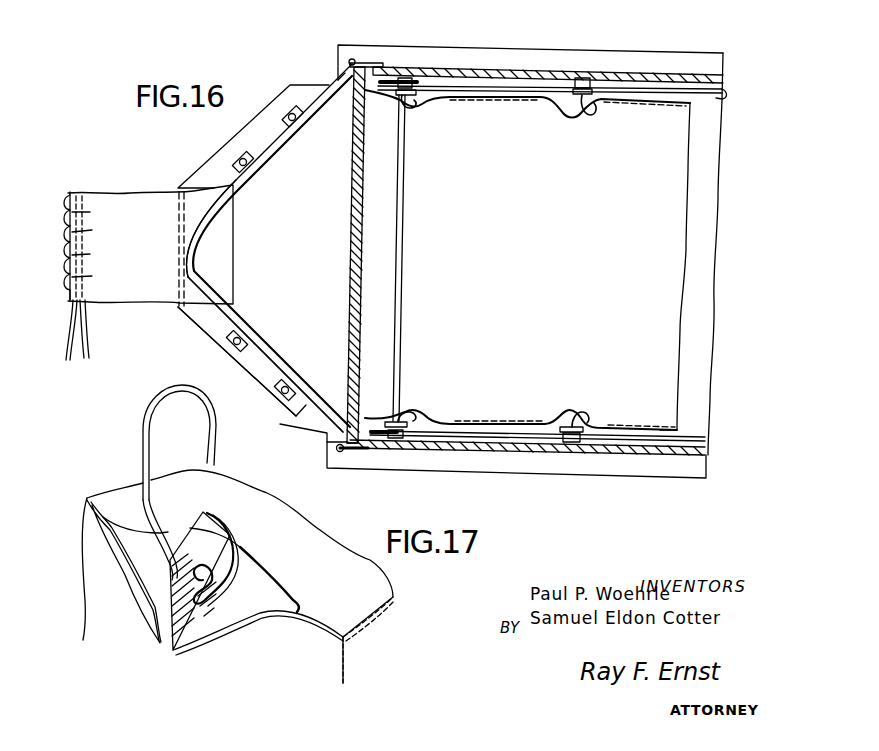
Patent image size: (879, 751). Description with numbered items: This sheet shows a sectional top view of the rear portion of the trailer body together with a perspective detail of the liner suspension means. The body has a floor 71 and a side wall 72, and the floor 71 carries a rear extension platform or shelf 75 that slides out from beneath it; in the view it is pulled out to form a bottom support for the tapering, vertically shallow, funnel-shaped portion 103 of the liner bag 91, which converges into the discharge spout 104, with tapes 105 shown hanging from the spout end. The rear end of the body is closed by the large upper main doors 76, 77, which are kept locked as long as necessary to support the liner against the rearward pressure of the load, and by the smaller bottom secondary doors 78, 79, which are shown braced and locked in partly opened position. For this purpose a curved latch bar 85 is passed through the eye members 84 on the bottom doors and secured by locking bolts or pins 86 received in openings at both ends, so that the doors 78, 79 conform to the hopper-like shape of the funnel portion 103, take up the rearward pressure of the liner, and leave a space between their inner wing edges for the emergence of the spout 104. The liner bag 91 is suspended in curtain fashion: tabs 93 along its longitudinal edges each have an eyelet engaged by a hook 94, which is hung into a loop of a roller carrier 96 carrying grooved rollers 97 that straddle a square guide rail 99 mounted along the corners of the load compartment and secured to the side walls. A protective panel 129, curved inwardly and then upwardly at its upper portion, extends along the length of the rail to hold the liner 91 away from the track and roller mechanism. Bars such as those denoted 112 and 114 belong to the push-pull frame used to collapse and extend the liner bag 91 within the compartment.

In FIG. 16, the floor 71 is at (326, 447).
In FIG. 16, the side wall 72 is at (552, 76).
In FIG. 16, the rear extension platform or shelf 75 is at (198, 328).
In FIG. 16, the upper main door 76 is at (353, 182).
In FIG. 16, the upper main door 77 is at (353, 357).
In FIG. 16, the bottom secondary door 78 is at (279, 147).
In FIG. 16, the bottom secondary door 79 is at (272, 360).
In FIG. 16, the eye member 84 is at (244, 160).
In FIG. 16, the curved latch bar 85 is at (194, 283).
In FIG. 16, the locking bolt or pin 86 is at (291, 114).
In FIG. 16, the liner bag 91 is at (647, 112).
In FIG. 17, the liner bag 91 is at (370, 608).
In FIG. 17, the tab 93 is at (186, 622).
In FIG. 17, the hook 94 is at (142, 444).
In FIG. 16, the roller carrier 96 is at (594, 114).
In FIG. 16, the grooved roller 97 is at (595, 85).
In FIG. 16, the guide rail 99 is at (463, 76).
In FIG. 16, the funnel-shaped portion 103 is at (337, 122).
In FIG. 16, the discharge spout 104 is at (129, 169).
In FIG. 16, the tapes 105 is at (72, 330).
In FIG. 16, the bar of push-pull frame 112 is at (353, 287).
In FIG. 16, the bar of push-pull frame 114 is at (544, 4).
In FIG. 16, the protective panel 129 is at (497, 97).